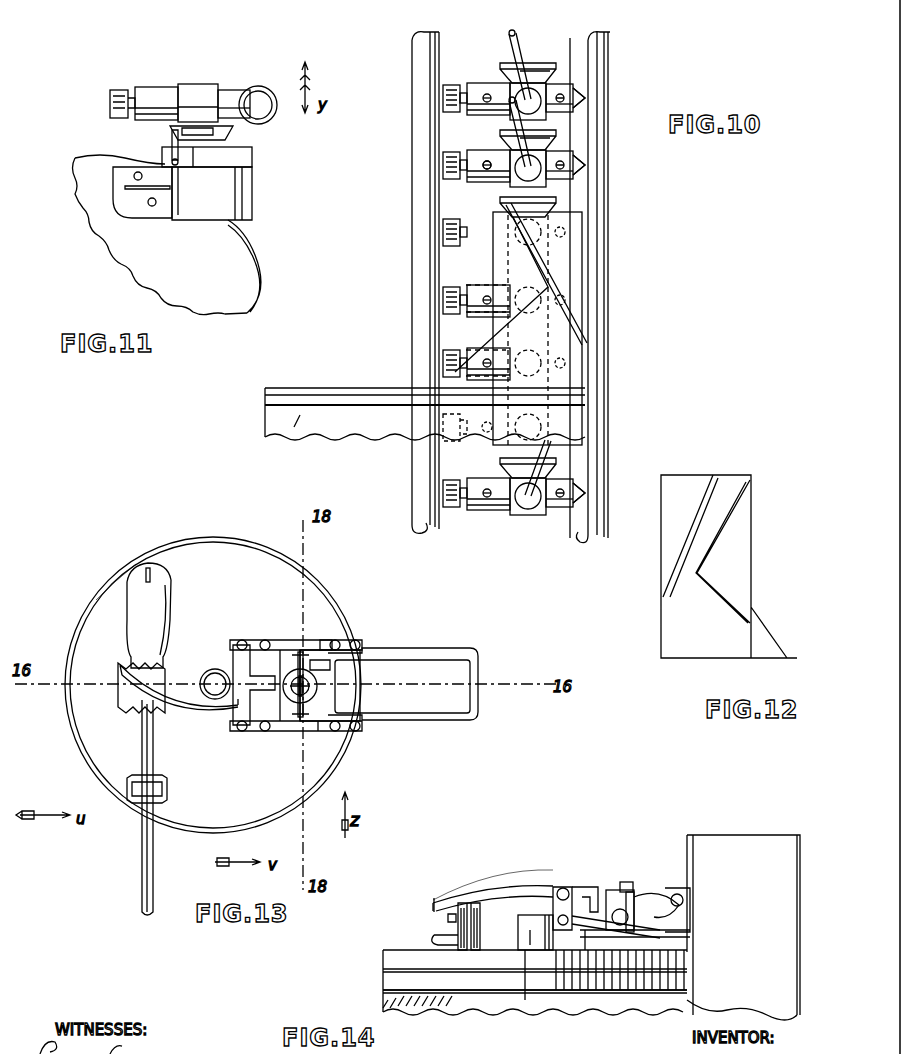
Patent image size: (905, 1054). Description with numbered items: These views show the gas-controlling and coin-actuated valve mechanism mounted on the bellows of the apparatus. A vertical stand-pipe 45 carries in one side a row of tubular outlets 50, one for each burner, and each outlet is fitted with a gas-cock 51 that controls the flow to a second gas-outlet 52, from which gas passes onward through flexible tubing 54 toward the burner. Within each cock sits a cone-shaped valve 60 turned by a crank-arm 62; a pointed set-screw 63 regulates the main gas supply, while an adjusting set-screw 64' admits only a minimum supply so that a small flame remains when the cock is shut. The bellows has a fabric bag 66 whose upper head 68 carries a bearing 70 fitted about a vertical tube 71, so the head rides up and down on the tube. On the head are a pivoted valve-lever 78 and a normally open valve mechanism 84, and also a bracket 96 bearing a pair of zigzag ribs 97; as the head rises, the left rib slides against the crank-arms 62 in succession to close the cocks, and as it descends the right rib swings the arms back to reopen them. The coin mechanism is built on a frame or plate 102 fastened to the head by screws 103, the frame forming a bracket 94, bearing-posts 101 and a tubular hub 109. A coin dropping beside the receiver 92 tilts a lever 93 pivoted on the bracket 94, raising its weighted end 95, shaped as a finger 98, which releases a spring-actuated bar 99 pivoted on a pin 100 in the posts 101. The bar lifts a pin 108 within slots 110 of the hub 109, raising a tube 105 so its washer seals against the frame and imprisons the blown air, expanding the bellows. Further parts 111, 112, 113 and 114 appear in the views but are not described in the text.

In FIG. 10, the stand-pipe 45 is at (600, 102).
In FIG. 11, the stand-pipe 45 is at (265, 110).
In FIG. 10, the tubular outlets 50 is at (557, 103).
In FIG. 11, the tubular outlets 50 is at (238, 88).
In FIG. 10, the gas-cock 51 is at (536, 66).
In FIG. 11, the gas-cock 51 is at (197, 92).
In FIG. 10, the gas-outlets 52 is at (474, 112).
In FIG. 11, the gas-outlets 52 is at (155, 92).
In FIG. 10, the flexible tubing 54 is at (445, 97).
In FIG. 11, the flexible tubing 54 is at (115, 116).
In FIG. 10, the cone-shaped valve 60 is at (536, 102).
In FIG. 10, the crank-arm 62 is at (512, 36).
In FIG. 11, the crank-arm 62 is at (174, 147).
In FIG. 10, the pointed set-screw 63 is at (490, 170).
In FIG. 10, the adjusting set-screw 64' is at (597, 316).
In FIG. 11, the adjusting set-screw 64' is at (234, 147).
In FIG. 10, the bellows bag 66 is at (327, 439).
In FIG. 14, the bellows bag 66 is at (500, 996).
In FIG. 10, the upper head of bellows 68 is at (322, 388).
In FIG. 11, the upper head of bellows 68 is at (167, 235).
In FIG. 13, the upper head of bellows 68 is at (168, 582).
In FIG. 14, the upper head of bellows 68 is at (450, 1006).
In FIG. 13, the bearing 70 is at (207, 676).
In FIG. 14, the bearing 70 is at (518, 925).
In FIG. 10, the vertical tube 71 is at (422, 80).
In FIG. 13, the valve-lever 78 is at (143, 626).
In FIG. 14, the valve-lever 78 is at (438, 936).
In FIG. 13, the valve mechanism 84 is at (213, 685).
In FIG. 14, the valve mechanism 84 is at (500, 865).
In FIG. 13, the receiver 92 is at (480, 671).
In FIG. 14, the receiver 92 is at (743, 927).
In FIG. 13, the lever 93 is at (402, 686).
In FIG. 13, the bracket 94 is at (361, 642).
In FIG. 14, the bracket 94 is at (682, 900).
In FIG. 13, the weighted end 95 is at (328, 686).
In FIG. 14, the weighted end 95 is at (645, 894).
In FIG. 10, the bracket 96 is at (582, 266).
In FIG. 11, the bracket 96 is at (220, 228).
In FIG. 12, the bracket 96 is at (660, 556).
In FIG. 10, the zigzag ribs 97 is at (560, 252).
In FIG. 11, the zigzag ribs 97 is at (180, 162).
In FIG. 12, the zigzag ribs 97 is at (746, 480).
In FIG. 14, the stud or finger 98 is at (680, 900).
In FIG. 13, the spring-actuated bar 99 is at (316, 733).
In FIG. 14, the spring-actuated bar 99 is at (592, 944).
In FIG. 14, the pin 100 is at (558, 918).
In FIG. 13, the bearing-posts 101 is at (234, 644).
In FIG. 14, the bearing-posts 101 is at (555, 888).
In FIG. 13, the frame or plate 102 is at (275, 640).
In FIG. 14, the frame or plate 102 is at (675, 952).
In FIG. 13, the screws 103 is at (266, 640).
In FIG. 14, the screws 103 is at (674, 935).
In FIG. 13, the tube 105 is at (299, 646).
In FIG. 14, the tube 105 is at (630, 884).
In FIG. 13, the pin 108 is at (334, 626).
In FIG. 14, the pin 108 is at (610, 926).
In FIG. 13, the tubular hub 109 is at (318, 692).
In FIG. 14, the tubular hub 109 is at (615, 890).
In FIG. 13, the slots 110 is at (332, 640).
In FIG. 14, the slots 110 is at (628, 892).
In FIG. 13, the arm 111 is at (215, 715).
In FIG. 14, the arm 111 is at (521, 890).
In FIG. 13, the nut 112 is at (130, 705).
In FIG. 14, the nut 112 is at (438, 900).
In FIG. 13, the bolt 113 is at (244, 640).
In FIG. 14, the bolt 113 is at (565, 888).
In FIG. 13, the T-member 114 is at (266, 678).
In FIG. 14, the T-member 114 is at (593, 887).